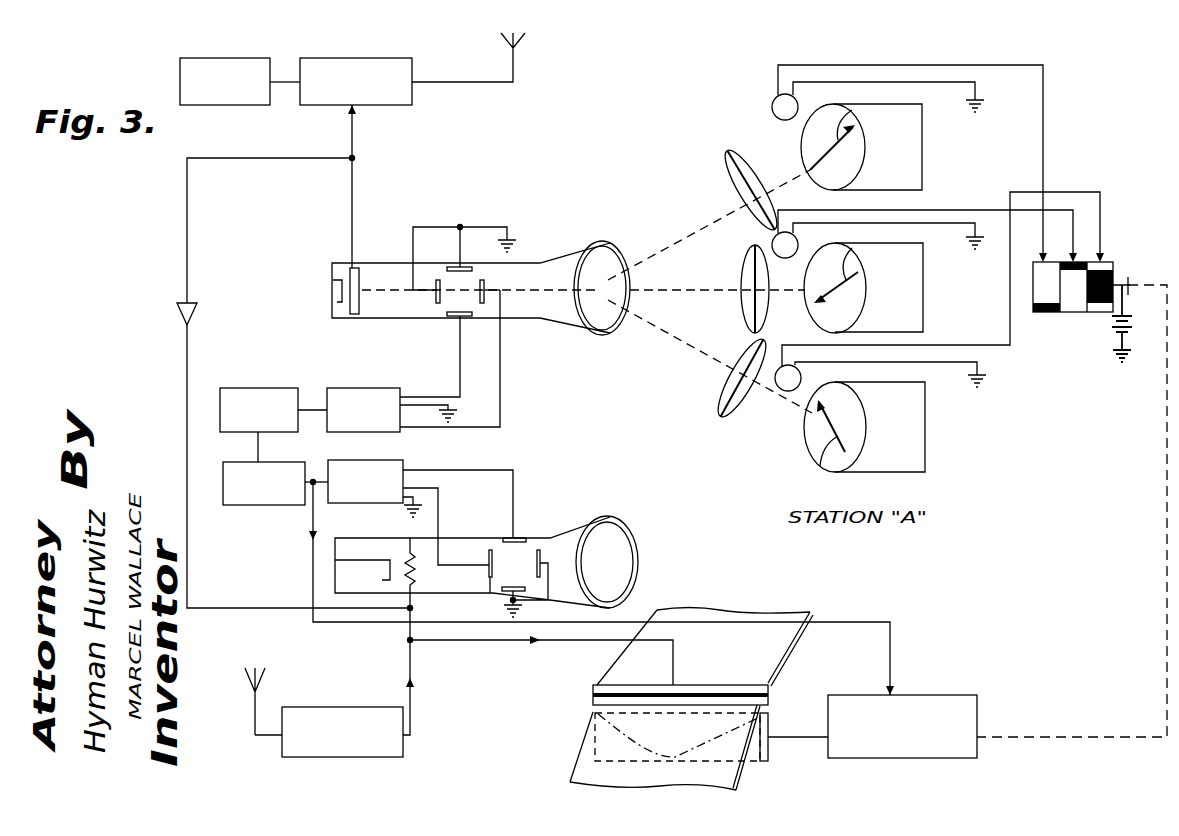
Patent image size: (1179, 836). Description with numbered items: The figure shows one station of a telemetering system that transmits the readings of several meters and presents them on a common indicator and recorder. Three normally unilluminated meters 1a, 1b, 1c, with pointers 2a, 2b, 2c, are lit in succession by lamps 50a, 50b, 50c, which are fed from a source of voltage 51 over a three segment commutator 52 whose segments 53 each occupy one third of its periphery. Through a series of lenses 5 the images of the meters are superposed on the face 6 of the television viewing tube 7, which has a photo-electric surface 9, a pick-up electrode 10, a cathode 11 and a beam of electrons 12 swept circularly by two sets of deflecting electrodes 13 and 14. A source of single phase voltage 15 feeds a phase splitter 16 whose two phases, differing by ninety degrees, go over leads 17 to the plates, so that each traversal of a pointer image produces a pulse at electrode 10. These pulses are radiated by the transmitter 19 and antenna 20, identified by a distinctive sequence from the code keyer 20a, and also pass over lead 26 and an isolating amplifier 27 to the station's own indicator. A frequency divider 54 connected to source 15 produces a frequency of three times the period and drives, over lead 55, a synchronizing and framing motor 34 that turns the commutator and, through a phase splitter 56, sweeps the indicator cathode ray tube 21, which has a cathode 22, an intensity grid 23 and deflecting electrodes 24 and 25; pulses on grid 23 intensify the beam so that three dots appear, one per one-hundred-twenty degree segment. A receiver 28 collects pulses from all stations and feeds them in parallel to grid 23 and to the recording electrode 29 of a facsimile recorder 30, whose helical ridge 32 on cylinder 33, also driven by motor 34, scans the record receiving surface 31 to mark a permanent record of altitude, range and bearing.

The meter 1a is at (935, 458).
The meter 1b is at (922, 272).
The meter 1c is at (922, 120).
The meter pointer 2a is at (822, 460).
The meter pointer 2b is at (851, 258).
The meter pointer 2c is at (850, 116).
The lens 5 is at (733, 157).
The face of the tube 6 is at (612, 255).
The television viewing tube 7 is at (385, 320).
The photo-electric surface 9 is at (608, 328).
The pick-up electrode 10 is at (372, 262).
The cathode 11 is at (333, 288).
The beam of electrons 12 is at (563, 292).
The beam deflecting electrodes 13 is at (450, 318).
The beam deflecting electrodes 14 is at (484, 282).
The source of single phase voltage 15 is at (258, 388).
The phase splitter 16 is at (368, 378).
The leads 17 is at (500, 354).
The transmitter 19 is at (398, 57).
The antenna 20 is at (518, 45).
The code keyer 20a is at (207, 58).
The cathode ray tube 21 is at (495, 595).
The cathode 22 is at (357, 558).
The intensity grid 23 is at (410, 546).
The deflecting electrode 24 is at (521, 538).
The deflecting electrode 25 is at (490, 550).
The lead 26 is at (263, 160).
The isolating amplifier 27 is at (197, 312).
The receiver 28 is at (375, 702).
The recording electrode 29 is at (594, 686).
The facsimile recorder 30 is at (807, 724).
The record receiving surface 31 is at (588, 735).
The helical ridge 32 is at (704, 760).
The cylinder 33 is at (770, 762).
The synchronizing and framing motor 34 is at (947, 695).
The lamp 50a is at (802, 378).
The lamp 50b is at (772, 240).
The lamp 50c is at (773, 108).
The source of voltage 51 is at (1131, 324).
The three segment commutator 52 is at (1077, 313).
The segments 53 is at (1115, 262).
The frequency divider 54 is at (236, 505).
The lead 55 is at (882, 620).
The phase splitter 56 is at (403, 464).